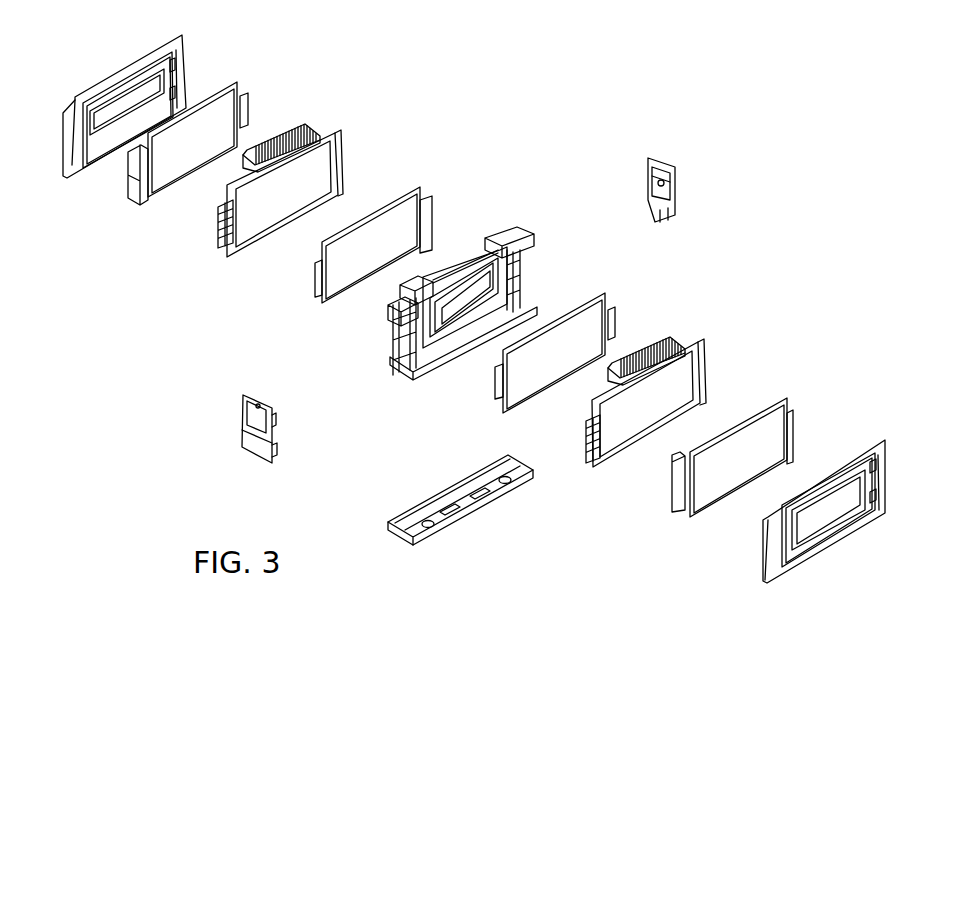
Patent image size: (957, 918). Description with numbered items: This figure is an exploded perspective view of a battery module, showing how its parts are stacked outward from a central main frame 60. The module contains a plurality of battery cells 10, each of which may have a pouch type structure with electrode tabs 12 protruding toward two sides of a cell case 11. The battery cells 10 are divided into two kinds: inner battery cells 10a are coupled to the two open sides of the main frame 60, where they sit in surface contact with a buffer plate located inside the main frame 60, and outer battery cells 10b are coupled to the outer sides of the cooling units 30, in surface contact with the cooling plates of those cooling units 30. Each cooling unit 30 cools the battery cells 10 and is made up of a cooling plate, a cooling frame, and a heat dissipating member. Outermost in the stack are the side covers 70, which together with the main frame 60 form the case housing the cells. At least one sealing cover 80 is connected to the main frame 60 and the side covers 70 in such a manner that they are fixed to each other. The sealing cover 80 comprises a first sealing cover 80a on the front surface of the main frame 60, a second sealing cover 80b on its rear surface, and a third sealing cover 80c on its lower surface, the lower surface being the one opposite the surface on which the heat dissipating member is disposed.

The battery cells 10 is at (499, 288).
The inner battery cells 10a is at (497, 290).
The outer battery cells 10b is at (260, 88).
The cell case 11 is at (322, 303).
The electrode tabs 12 is at (318, 278).
The cooling unit 30 is at (354, 144).
The main frame 60 is at (550, 238).
The side covers 70 is at (200, 67).
The sealing cover 80 is at (462, 360).
The first sealing cover 80a is at (243, 437).
The second sealing cover 80b is at (698, 177).
The third sealing cover 80c is at (487, 505).